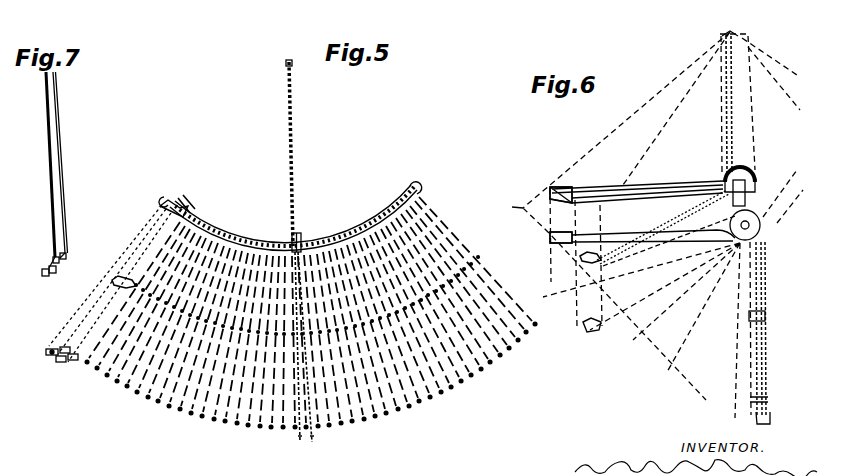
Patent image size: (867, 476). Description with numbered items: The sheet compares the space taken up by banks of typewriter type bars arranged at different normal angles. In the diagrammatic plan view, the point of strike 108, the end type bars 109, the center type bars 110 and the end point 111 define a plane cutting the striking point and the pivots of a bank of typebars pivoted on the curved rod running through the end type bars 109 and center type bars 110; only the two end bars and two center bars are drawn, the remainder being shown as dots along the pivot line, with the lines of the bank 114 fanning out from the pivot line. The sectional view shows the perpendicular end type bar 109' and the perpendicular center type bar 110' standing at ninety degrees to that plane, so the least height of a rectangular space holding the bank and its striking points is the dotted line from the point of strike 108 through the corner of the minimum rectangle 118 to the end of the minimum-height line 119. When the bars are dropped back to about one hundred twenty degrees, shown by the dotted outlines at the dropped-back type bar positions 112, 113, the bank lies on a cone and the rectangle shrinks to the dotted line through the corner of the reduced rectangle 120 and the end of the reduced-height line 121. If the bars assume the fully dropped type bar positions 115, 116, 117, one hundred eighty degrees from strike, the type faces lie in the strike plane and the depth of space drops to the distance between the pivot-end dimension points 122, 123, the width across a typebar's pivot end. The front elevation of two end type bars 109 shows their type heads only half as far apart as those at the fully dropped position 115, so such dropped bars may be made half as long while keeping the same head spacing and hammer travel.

In FIG. 5, the point of strike 108 is at (284, 70).
In FIG. 6, the point of strike 108 is at (747, 92).
In FIG. 5, the end type bars 109 is at (173, 196).
In FIG. 6, the end type bars 109 is at (757, 177).
In FIG. 6, the perpendicular end type bar 109' is at (578, 186).
In FIG. 5, the center type bars 110 is at (314, 234).
In FIG. 6, the center type bars 110 is at (765, 225).
In FIG. 6, the perpendicular center type bar 110' is at (582, 228).
In FIG. 5, the end point of the pivot plane 111 is at (432, 184).
In FIG. 5, the dropped-back type bar position 112 is at (114, 281).
In FIG. 6, the dropped-back type bar position 112 is at (598, 262).
In FIG. 5, the dropped-back type bar position 113 is at (307, 295).
In FIG. 6, the dropped-back type bar position 113 is at (590, 330).
In FIG. 5, the strings 114 is at (471, 263).
In FIG. 5, the fully dropped type bar position 115 is at (53, 349).
In FIG. 6, the fully dropped type bar position 115 is at (765, 316).
In FIG. 5, the fully dropped type bar position 116 is at (310, 359).
In FIG. 6, the fully dropped type bar position 116 is at (767, 401).
In FIG. 5, the fully dropped type bar position 117 is at (538, 320).
In FIG. 6, the corner of minimum rectangle 118 is at (503, 209).
In FIG. 6, the end of minimum-height line 119 is at (633, 340).
In FIG. 6, the corner of reduced rectangle 120 is at (548, 296).
In FIG. 6, the end of reduced-height line 121 is at (655, 375).
In FIG. 6, the pivot-end dimension point 122 is at (741, 420).
In FIG. 6, the pivot-end dimension point 123 is at (770, 420).